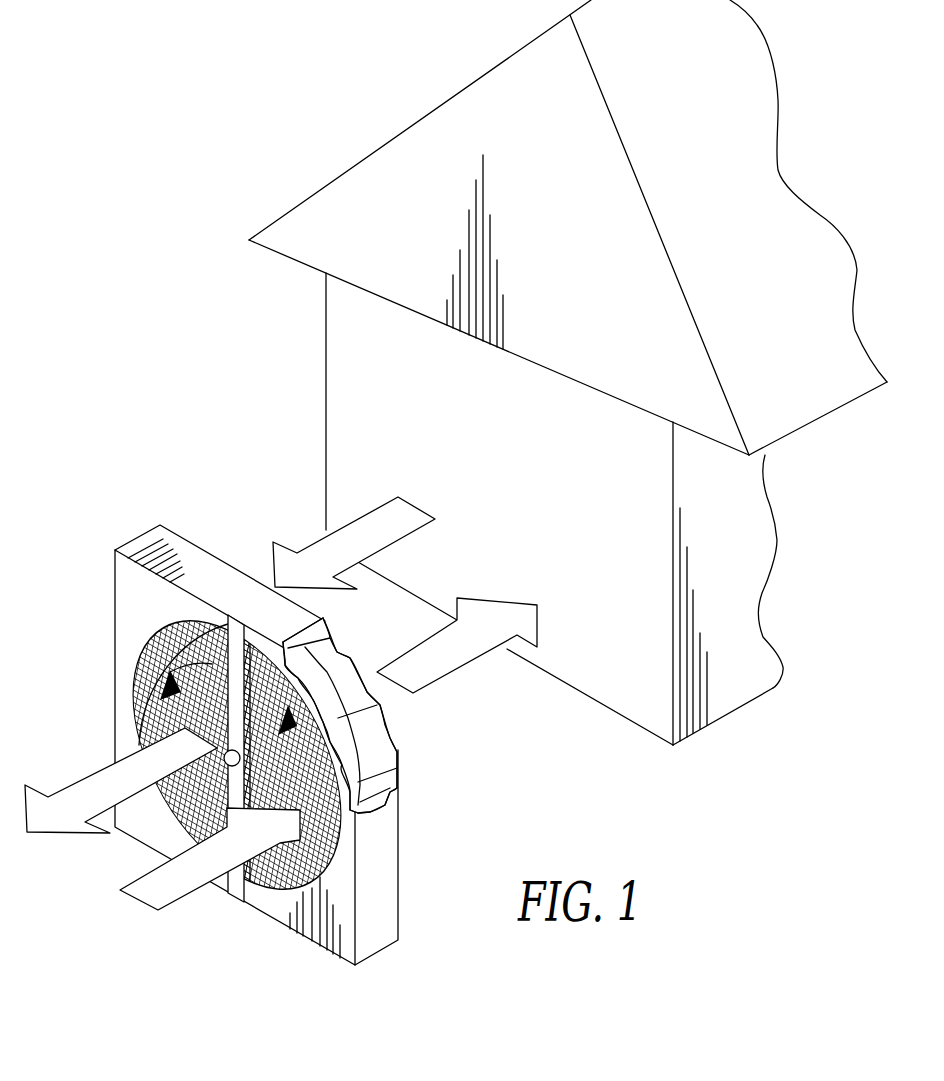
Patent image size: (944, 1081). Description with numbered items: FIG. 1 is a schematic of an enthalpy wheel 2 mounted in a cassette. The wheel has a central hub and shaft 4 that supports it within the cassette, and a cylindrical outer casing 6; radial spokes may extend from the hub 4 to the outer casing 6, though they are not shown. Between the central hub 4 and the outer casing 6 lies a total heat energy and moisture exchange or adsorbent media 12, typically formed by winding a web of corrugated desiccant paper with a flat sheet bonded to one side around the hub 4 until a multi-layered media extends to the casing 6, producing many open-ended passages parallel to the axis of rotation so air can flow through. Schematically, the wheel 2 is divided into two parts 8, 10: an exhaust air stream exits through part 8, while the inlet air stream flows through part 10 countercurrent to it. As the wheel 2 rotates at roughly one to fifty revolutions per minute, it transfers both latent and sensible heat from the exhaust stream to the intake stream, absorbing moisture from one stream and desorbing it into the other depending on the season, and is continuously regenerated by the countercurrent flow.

The enthalpy wheel 2 is at (241, 745).
The central hub and shaft 4 is at (226, 760).
The cylindrical outer casing 6 is at (365, 719).
The wheel part 8 is at (128, 730).
The wheel part 10 is at (260, 883).
The adsorbent media 12 is at (335, 833).